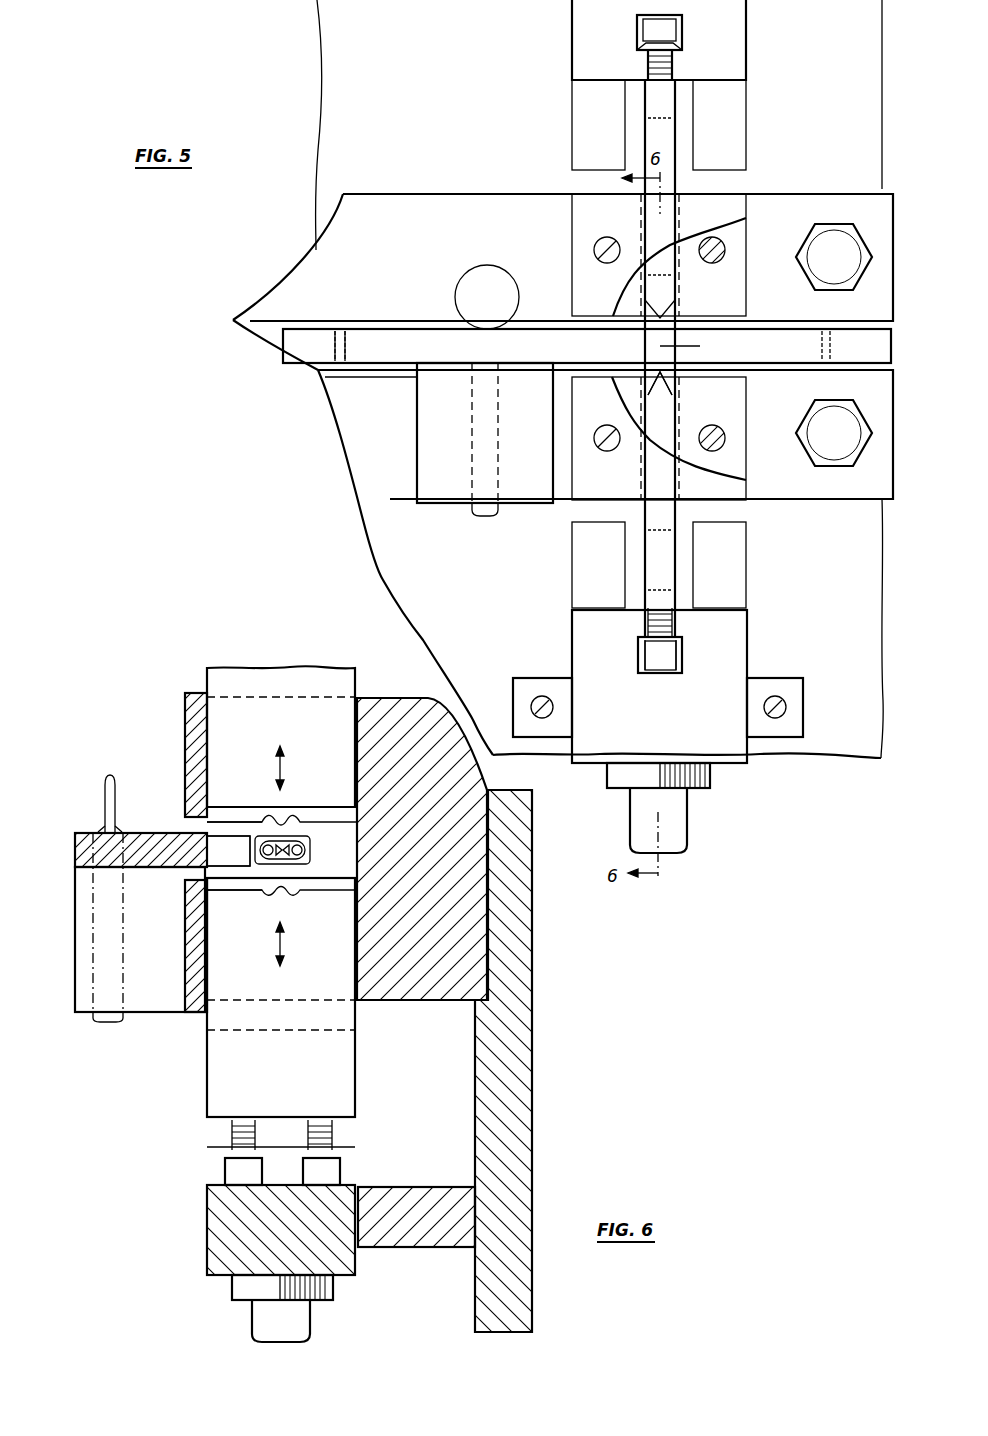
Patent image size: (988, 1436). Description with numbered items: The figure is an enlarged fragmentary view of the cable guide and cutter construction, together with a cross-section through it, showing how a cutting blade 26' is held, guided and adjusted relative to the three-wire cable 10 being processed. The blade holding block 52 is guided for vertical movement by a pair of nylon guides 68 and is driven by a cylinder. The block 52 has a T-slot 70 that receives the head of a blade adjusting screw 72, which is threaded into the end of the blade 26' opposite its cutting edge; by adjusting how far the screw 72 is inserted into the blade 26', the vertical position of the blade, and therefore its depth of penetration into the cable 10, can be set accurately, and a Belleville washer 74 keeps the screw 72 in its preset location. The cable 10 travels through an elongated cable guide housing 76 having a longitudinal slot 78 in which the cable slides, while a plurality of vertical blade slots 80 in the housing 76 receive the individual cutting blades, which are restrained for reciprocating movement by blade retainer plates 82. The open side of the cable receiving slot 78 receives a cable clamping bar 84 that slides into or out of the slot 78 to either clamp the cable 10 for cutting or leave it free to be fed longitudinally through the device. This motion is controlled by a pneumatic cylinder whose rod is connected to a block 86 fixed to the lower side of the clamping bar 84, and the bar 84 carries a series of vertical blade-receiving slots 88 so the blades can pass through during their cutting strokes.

In FIG. 6, the three-wire cable 10 is at (306, 868).
In FIG. 5, the blade 26' is at (683, 358).
In FIG. 6, the blade 26' is at (282, 891).
In FIG. 5, the blade holding block 52 is at (612, 30).
In FIG. 6, the blade holding block 52 is at (212, 1255).
In FIG. 5, the nylon guides 68 is at (526, 685).
In FIG. 6, the nylon guides 68 is at (418, 1230).
In FIG. 5, the T-slot 70 is at (645, 660).
In FIG. 5, the blade adjusting screw 72 is at (666, 674).
In FIG. 6, the blade adjusting screw 72 is at (228, 1170).
In FIG. 5, the Belleville washer 74 is at (682, 646).
In FIG. 5, the cable guide housing 76 is at (387, 237).
In FIG. 6, the cable guide housing 76 is at (392, 1008).
In FIG. 5, the longitudinal slot 78 is at (360, 332).
In FIG. 6, the longitudinal slot 78 is at (241, 838).
In FIG. 5, the vertical blade slots 80 is at (672, 397).
In FIG. 6, the vertical blade slots 80 is at (357, 844).
In FIG. 5, the blade retainer plates 82 is at (617, 487).
In FIG. 6, the blade retainer plates 82 is at (190, 725).
In FIG. 5, the cable clamping bar 84 is at (415, 334).
In FIG. 6, the cable clamping bar 84 is at (80, 840).
In FIG. 5, the block 86 is at (457, 445).
In FIG. 6, the block 86 is at (78, 935).
In FIG. 5, the vertical blade-receiving slots 88 is at (672, 338).
In FIG. 6, the vertical blade-receiving slots 88 is at (210, 855).